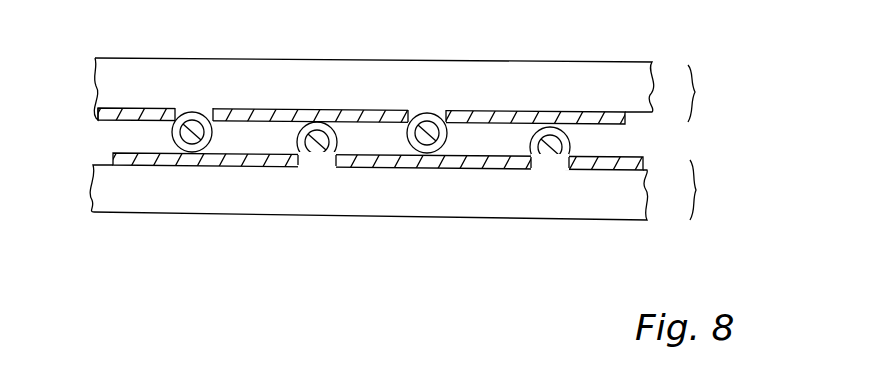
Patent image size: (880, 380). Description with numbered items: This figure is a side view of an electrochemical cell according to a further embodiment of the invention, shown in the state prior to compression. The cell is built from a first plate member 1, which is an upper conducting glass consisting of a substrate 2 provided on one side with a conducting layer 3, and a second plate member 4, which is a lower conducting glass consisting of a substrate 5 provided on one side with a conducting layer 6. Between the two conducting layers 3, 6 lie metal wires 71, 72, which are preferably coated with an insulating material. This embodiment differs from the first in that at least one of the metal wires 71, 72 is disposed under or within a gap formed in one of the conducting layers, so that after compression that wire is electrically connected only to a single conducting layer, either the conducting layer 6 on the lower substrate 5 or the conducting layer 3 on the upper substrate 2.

The first plate member 1 is at (710, 92).
The substrate 2 is at (598, 74).
The conducting layer 3 is at (88, 118).
The second plate member 4 is at (712, 190).
The substrate 5 is at (572, 212).
The conducting layer 6 is at (92, 160).
The metal wire 71 is at (196, 118).
The metal wire 72 is at (301, 165).